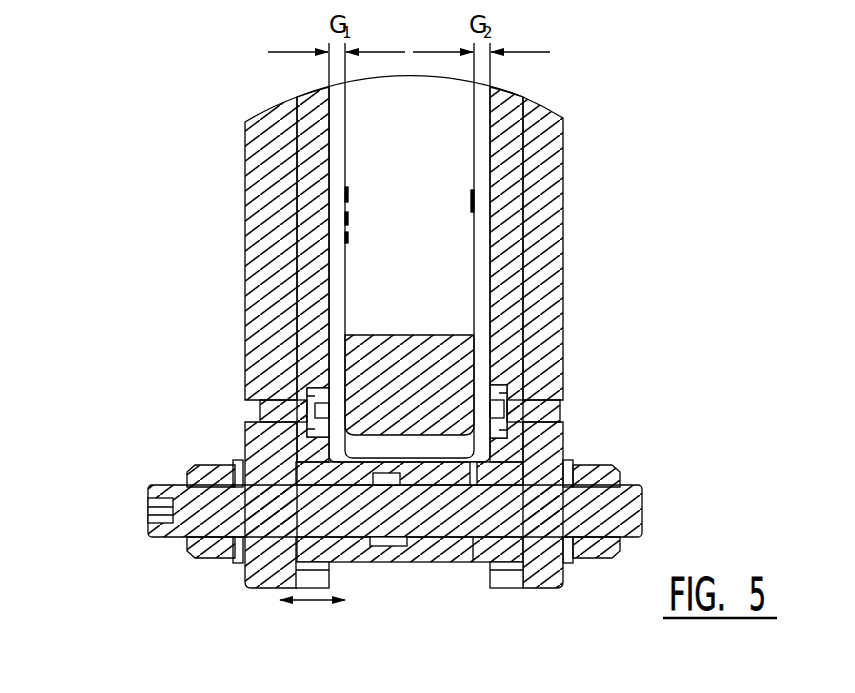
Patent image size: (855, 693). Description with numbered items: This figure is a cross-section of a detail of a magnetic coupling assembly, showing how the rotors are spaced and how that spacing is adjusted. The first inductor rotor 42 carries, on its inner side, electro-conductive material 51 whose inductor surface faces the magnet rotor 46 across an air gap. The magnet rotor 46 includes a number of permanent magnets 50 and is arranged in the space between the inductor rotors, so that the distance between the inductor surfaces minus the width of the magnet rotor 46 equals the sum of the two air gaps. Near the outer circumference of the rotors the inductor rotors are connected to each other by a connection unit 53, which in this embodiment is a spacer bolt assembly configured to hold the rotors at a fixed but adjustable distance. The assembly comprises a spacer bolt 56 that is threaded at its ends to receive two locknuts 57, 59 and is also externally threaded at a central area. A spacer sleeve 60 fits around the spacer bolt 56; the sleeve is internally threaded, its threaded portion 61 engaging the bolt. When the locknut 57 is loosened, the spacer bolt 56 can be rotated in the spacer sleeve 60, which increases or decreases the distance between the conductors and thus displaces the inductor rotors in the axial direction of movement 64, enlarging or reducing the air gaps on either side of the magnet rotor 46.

The first inductor rotor 42 is at (225, 258).
The electro-conductive material 51 is at (312, 103).
The permanent magnets 50 is at (407, 194).
The magnet rotor 46 is at (463, 357).
The threaded portion 61 is at (416, 478).
The spacer bolt 56 is at (160, 533).
The locknut 57 is at (213, 547).
The locknut 59 is at (603, 552).
The spacer sleeve 60 is at (437, 562).
The connection unit 53 is at (486, 606).
The direction of movement 64 is at (310, 600).